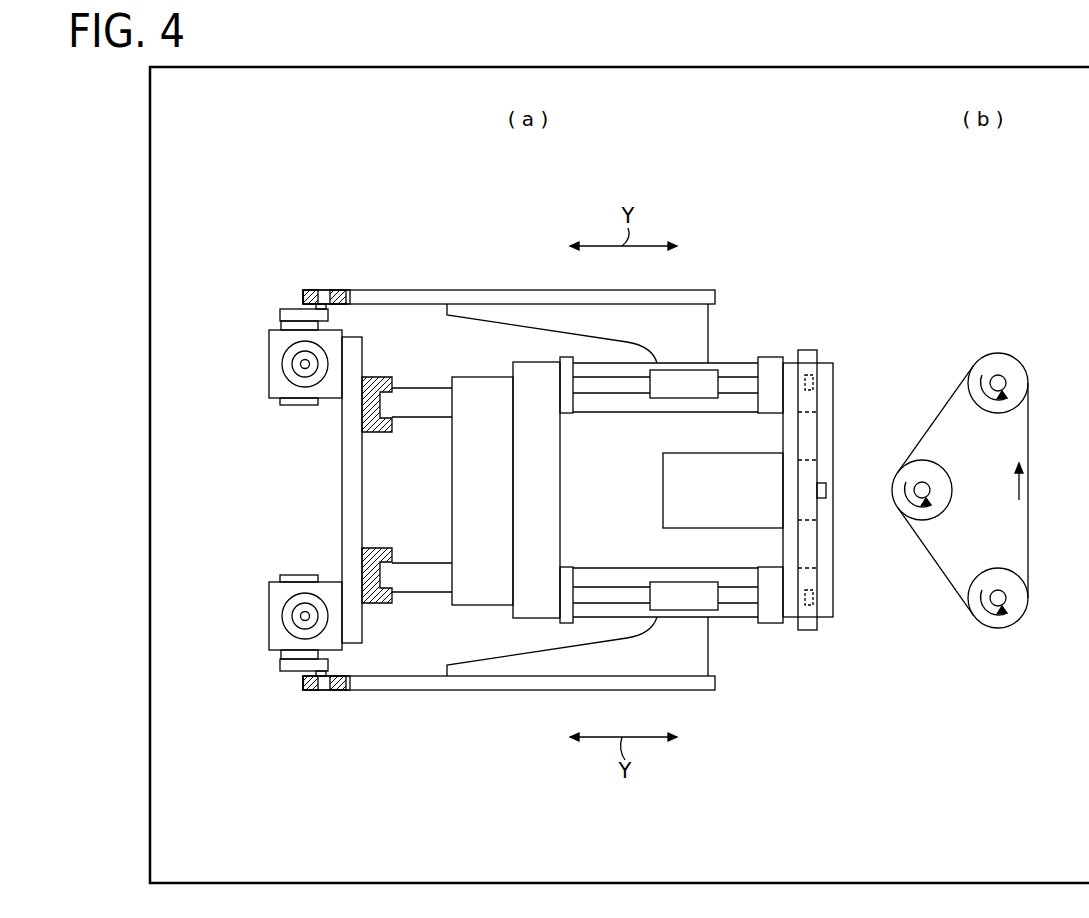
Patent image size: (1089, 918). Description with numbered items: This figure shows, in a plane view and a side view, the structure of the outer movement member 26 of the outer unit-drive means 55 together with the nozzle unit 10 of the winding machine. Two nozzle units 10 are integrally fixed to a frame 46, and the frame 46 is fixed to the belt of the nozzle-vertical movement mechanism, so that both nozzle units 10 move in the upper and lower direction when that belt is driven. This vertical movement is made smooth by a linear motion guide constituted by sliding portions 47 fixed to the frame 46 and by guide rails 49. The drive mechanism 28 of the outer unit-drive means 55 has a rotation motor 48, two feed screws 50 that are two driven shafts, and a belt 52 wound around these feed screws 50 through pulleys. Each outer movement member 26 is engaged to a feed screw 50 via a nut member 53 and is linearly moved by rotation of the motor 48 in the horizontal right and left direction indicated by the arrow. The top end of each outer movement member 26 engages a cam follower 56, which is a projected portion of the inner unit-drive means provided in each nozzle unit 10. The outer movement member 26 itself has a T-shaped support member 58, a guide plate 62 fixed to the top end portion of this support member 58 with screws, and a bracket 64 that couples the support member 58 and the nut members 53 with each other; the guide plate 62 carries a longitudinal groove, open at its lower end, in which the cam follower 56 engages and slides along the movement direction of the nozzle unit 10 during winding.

The nozzle unit 10 is at (268, 352).
The outer movement member 26 is at (500, 290).
The drive mechanism 28 is at (805, 323).
The frame 46 is at (343, 488).
The sliding portion 47 is at (374, 433).
The rotation motor 48 is at (664, 483).
The guide rail 49 is at (418, 395).
The feed screw 50 is at (612, 388).
The belt 52 is at (810, 433).
The nut member 53 is at (695, 385).
The outer unit-drive means 55 is at (745, 703).
The cam follower 56 is at (318, 293).
The support member 58 is at (430, 290).
The guide plate 62 is at (331, 292).
The bracket 64 is at (670, 312).